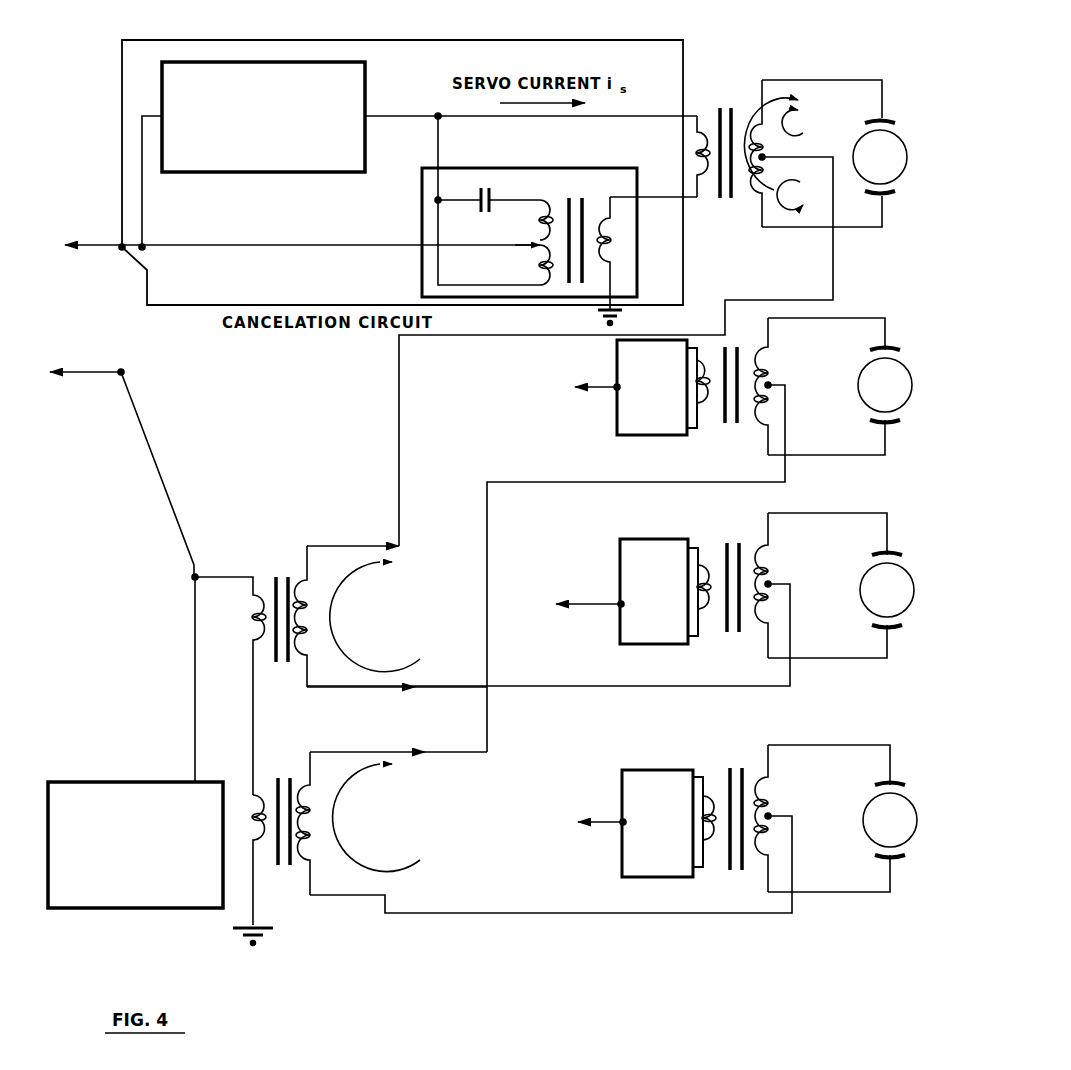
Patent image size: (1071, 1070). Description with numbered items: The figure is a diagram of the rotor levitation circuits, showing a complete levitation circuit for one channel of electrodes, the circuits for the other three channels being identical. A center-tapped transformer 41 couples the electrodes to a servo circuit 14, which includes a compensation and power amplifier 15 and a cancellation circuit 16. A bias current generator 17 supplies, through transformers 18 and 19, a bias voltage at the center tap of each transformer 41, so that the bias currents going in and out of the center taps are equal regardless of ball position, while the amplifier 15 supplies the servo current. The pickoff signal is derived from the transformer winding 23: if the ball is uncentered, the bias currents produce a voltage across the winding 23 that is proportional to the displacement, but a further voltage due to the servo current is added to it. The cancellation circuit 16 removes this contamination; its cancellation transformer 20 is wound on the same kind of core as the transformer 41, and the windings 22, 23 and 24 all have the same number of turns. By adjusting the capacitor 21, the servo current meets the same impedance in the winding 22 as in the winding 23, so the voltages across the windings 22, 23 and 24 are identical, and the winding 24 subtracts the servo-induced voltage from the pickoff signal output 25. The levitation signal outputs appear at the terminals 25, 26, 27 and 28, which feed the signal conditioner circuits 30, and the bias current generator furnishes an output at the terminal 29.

The servo circuit 14 is at (644, 884).
The compensation and power amplifier 15 is at (324, 110).
The cancellation circuit 16 is at (564, 284).
The bias current generator 17 is at (146, 875).
The transformer 18 is at (273, 650).
The transformer 19 is at (278, 778).
The cancellation transformer 20 is at (596, 320).
The capacitor 21 is at (493, 204).
The winding 22 is at (616, 242).
The transformer winding 23 is at (705, 178).
The winding 24 is at (536, 246).
The pickoff signal output 25 is at (120, 246).
The terminal 26 is at (610, 387).
The terminal 27 is at (609, 598).
The terminal 28 is at (615, 823).
The terminal 29 is at (124, 375).
The signal conditioner circuit 30 is at (314, 540).
The center-tapped transformer 41 is at (729, 98).